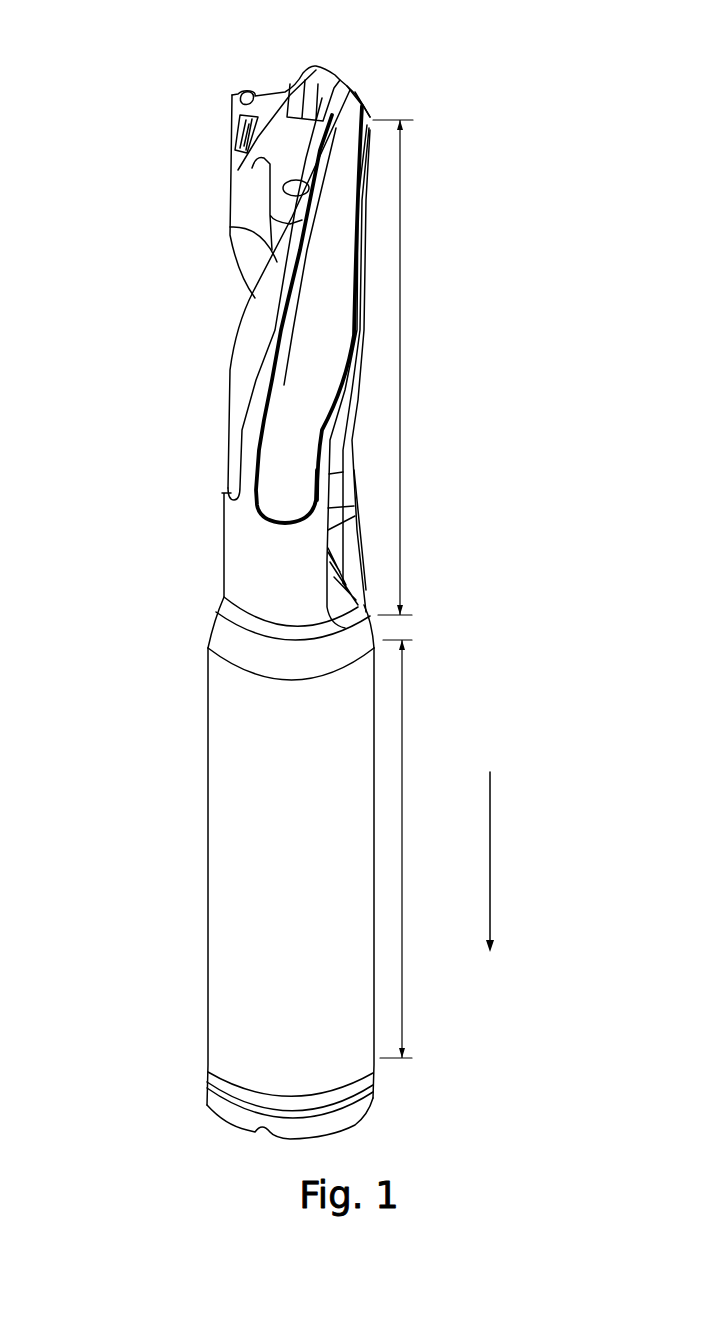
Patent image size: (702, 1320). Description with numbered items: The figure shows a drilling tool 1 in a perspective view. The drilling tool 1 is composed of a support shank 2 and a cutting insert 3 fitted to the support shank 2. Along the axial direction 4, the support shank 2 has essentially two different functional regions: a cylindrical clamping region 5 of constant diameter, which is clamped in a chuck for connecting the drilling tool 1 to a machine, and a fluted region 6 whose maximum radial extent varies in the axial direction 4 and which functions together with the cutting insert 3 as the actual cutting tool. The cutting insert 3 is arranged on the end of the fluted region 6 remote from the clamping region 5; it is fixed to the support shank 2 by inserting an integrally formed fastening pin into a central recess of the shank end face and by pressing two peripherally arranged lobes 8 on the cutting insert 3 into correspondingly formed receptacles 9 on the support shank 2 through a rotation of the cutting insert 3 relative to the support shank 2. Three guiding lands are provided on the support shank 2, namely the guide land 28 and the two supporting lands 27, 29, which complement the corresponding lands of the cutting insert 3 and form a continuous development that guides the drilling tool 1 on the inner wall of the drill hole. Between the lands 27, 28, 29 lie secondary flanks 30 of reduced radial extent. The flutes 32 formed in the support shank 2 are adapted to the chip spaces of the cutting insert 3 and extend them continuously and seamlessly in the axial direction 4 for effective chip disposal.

The drilling tool 1 is at (150, 535).
The support shank 2 is at (220, 227).
The cutting insert 3 is at (222, 128).
The axial direction 4 is at (492, 853).
The clamping region 5 is at (403, 668).
The fluted region 6 is at (400, 345).
The lobes 8 is at (240, 100).
The receptacles 9 is at (373, 108).
The supporting land 27 is at (230, 181).
The guide land 28 is at (343, 228).
The supporting land 29 is at (330, 473).
The secondary flanks 30 is at (258, 340).
The flutes 32 is at (272, 222).